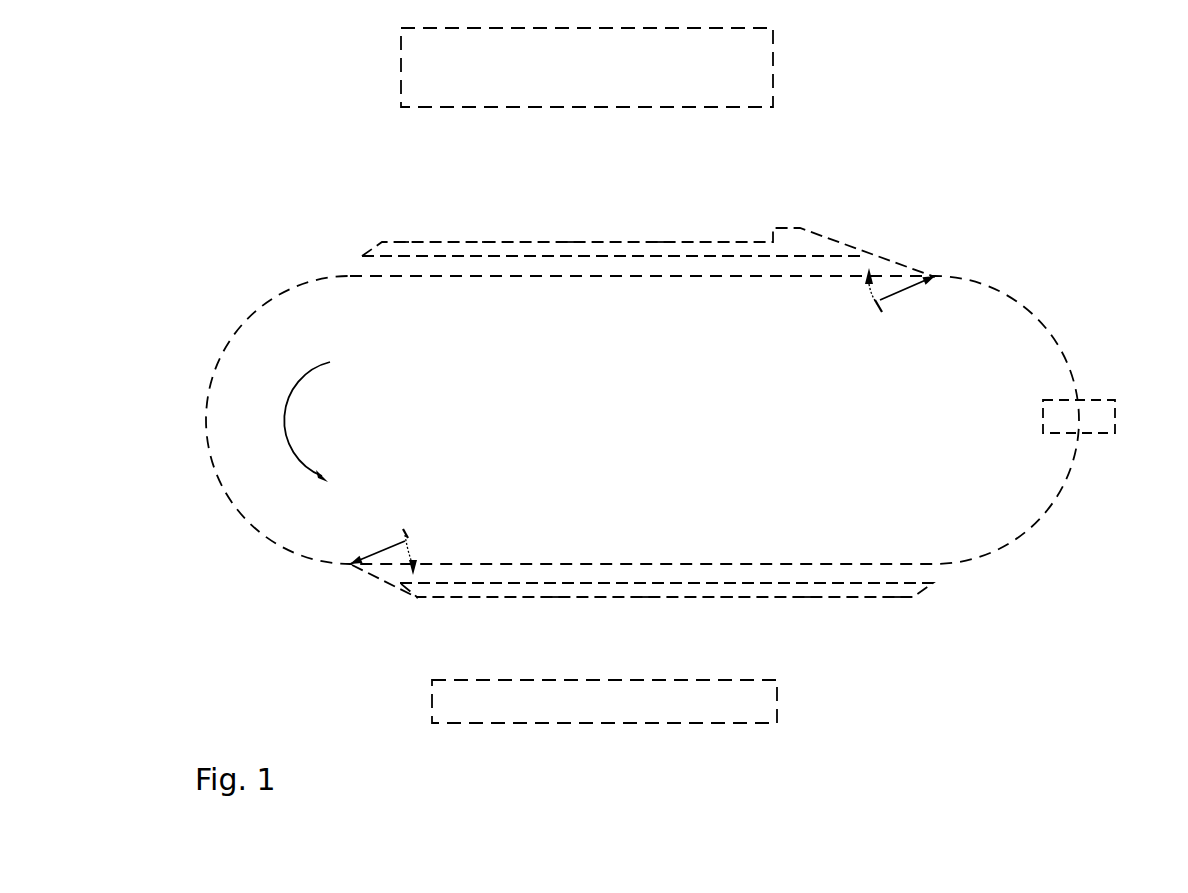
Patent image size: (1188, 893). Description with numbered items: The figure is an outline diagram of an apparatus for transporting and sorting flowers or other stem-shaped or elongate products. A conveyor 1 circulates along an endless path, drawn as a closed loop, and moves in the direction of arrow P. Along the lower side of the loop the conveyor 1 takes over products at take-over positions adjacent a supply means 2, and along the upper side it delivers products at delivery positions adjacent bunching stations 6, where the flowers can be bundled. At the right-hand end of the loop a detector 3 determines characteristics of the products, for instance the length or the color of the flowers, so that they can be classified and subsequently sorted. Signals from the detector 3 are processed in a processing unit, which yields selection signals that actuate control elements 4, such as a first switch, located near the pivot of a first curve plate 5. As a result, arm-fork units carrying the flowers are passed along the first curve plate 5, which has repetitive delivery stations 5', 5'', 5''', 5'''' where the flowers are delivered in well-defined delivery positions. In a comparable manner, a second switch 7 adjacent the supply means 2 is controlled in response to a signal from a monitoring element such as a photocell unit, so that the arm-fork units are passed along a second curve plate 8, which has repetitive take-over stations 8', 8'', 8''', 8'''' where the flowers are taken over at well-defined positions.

The conveyor 1 is at (1031, 304).
The supply means 2 is at (779, 702).
The detector 3 is at (1117, 418).
The control elements 4 is at (908, 288).
The first curve plate 5 is at (648, 225).
The delivery station 5' is at (663, 208).
The delivery station 5'' is at (581, 208).
The delivery station 5''' is at (500, 208).
The delivery station 5'''' is at (417, 208).
The bunching stations 6 is at (775, 68).
The second switch 7 is at (388, 553).
The second curve plate 8 is at (632, 616).
The take-over station 8' is at (560, 631).
The take-over station 8'' is at (691, 631).
The take-over station 8''' is at (820, 631).
The take-over station 8'''' is at (906, 631).
The direction of transport P is at (285, 421).